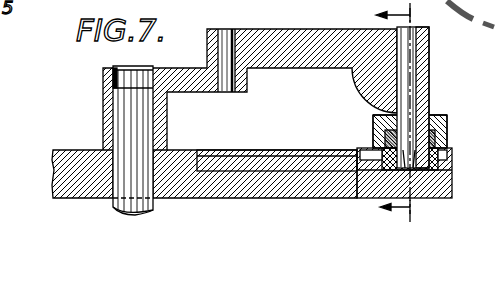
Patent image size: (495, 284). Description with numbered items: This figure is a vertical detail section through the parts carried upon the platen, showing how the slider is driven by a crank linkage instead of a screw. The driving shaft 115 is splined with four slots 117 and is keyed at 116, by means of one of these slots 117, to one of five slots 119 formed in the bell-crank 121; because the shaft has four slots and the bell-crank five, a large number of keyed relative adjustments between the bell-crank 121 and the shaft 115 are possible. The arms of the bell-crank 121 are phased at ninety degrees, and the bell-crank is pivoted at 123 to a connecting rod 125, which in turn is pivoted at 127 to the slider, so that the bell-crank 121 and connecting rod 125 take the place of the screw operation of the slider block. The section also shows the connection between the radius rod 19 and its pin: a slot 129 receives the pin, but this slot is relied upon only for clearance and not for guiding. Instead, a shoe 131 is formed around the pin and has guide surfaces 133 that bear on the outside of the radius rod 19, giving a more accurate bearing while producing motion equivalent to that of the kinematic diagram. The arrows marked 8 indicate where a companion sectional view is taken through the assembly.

The section line 8- 8 is at (408, 111).
The radius rod 19 is at (382, 133).
The driving shaft 115 is at (125, 172).
The key 116 is at (133, 79).
The slots 117 is at (152, 115).
The slots 119 is at (148, 68).
The bell-crank 121 is at (185, 88).
The pivot 123 is at (231, 30).
The connecting rod 125 is at (283, 58).
The pivot 127 is at (420, 47).
The slot 129 is at (445, 116).
The shoe 131 is at (374, 115).
The guide surfaces 133 is at (376, 128).